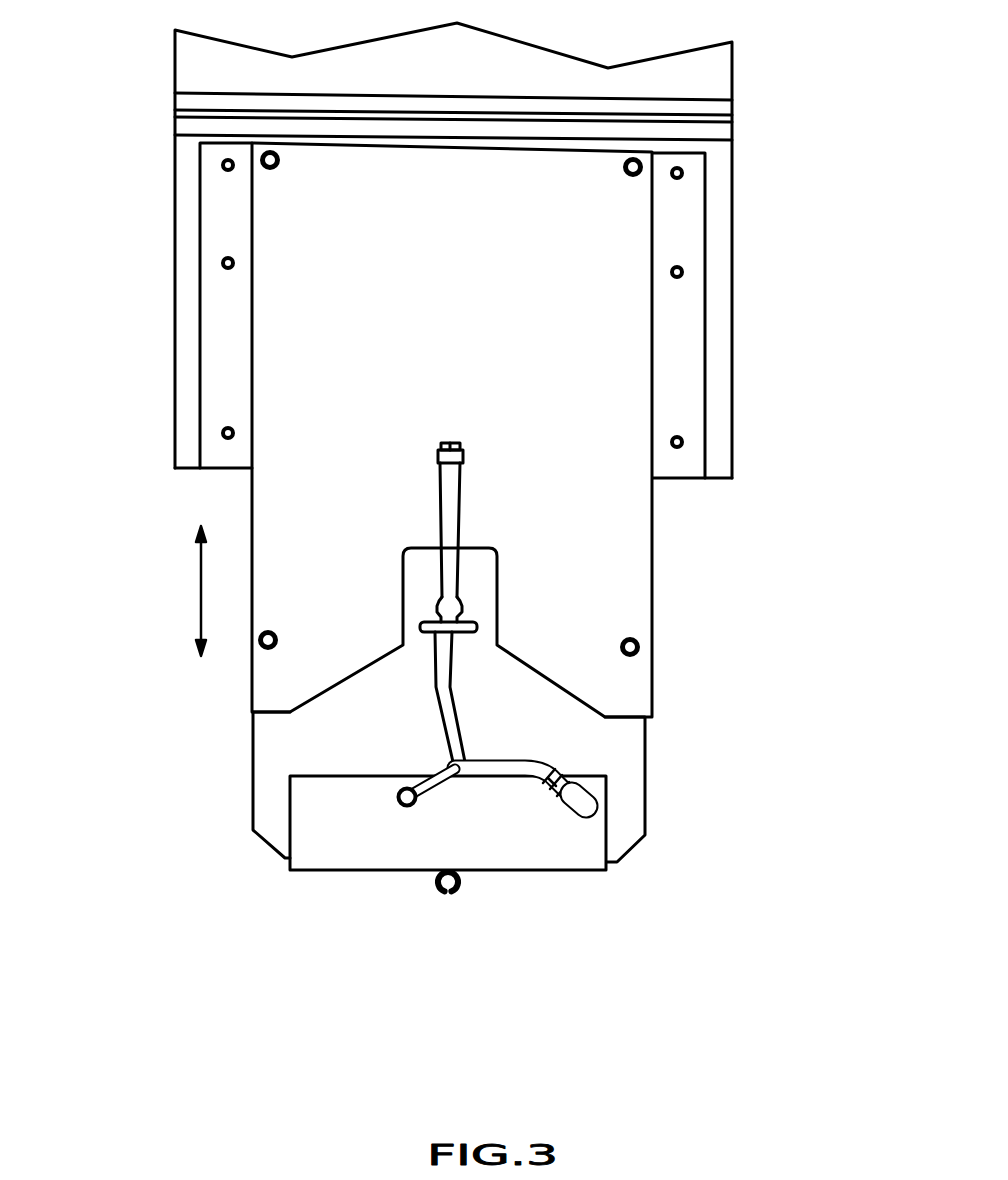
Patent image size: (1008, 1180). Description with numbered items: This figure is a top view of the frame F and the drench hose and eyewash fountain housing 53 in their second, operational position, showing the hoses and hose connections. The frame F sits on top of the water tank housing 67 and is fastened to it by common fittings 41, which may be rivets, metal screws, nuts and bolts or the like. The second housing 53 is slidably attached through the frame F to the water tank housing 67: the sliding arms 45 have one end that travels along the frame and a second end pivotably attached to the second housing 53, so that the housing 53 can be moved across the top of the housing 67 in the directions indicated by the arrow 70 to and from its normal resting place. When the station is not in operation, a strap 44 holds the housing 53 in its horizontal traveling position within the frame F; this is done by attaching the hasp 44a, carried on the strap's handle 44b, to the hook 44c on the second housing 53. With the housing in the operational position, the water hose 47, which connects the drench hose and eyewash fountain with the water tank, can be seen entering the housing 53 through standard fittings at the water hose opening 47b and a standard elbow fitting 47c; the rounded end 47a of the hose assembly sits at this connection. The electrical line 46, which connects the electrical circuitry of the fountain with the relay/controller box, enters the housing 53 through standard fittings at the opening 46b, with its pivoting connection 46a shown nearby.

The common fittings 41 is at (221, 167).
The water tank housing 67 is at (717, 378).
The frame F is at (627, 532).
The strap 44 is at (452, 520).
The hasp 44a is at (468, 630).
The handle 44b is at (452, 602).
The hook 44c is at (450, 895).
The sliding arms 45 is at (263, 744).
The electrical line 46 is at (433, 773).
The link pivot 46a is at (400, 806).
The opening 46b is at (405, 808).
The water hose 47 is at (517, 766).
The lever arm end 47a is at (597, 807).
The water hose opening 47b is at (573, 813).
The elbow fitting 47c is at (597, 812).
The second housing 53 is at (577, 858).
The arrow 70 is at (199, 584).